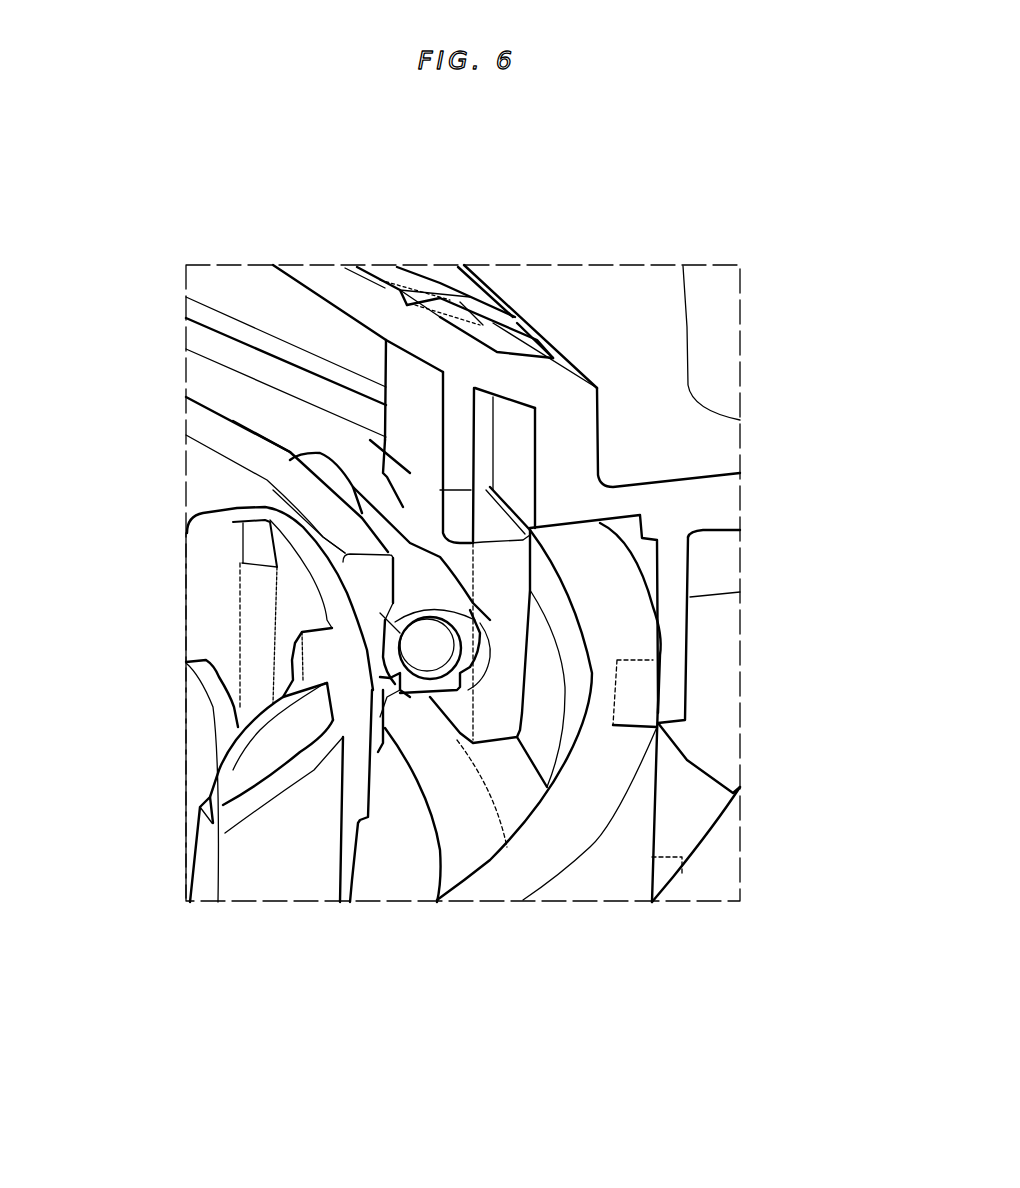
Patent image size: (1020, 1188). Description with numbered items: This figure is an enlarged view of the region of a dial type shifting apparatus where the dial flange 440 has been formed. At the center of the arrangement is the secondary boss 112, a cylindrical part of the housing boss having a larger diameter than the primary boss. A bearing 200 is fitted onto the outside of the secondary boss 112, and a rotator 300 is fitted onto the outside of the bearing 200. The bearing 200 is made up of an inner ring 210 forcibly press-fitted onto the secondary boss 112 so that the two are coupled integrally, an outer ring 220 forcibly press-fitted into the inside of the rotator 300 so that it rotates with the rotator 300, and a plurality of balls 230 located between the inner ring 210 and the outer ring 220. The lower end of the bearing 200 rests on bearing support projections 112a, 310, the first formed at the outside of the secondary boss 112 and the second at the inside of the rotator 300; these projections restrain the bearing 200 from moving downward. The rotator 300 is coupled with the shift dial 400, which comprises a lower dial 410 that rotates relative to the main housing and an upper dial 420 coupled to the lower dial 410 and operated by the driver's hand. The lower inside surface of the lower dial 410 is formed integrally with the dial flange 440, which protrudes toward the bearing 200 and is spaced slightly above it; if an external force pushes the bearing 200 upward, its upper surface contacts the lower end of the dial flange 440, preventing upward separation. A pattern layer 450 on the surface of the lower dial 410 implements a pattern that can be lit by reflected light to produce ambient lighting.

The secondary boss 112 is at (278, 880).
The bearing support projection 112a is at (390, 867).
The bearing 200 is at (180, 580).
The inner ring 210 is at (243, 441).
The outer ring 220 is at (244, 357).
The balls 230 is at (322, 465).
The rotator 300 is at (613, 867).
The bearing support projection 310 is at (517, 802).
The shift dial 400 is at (642, 263).
The lower dial 410 is at (570, 452).
The upper dial 420 is at (640, 328).
The dial flange 440 is at (413, 423).
The pattern layer 450 is at (489, 325).